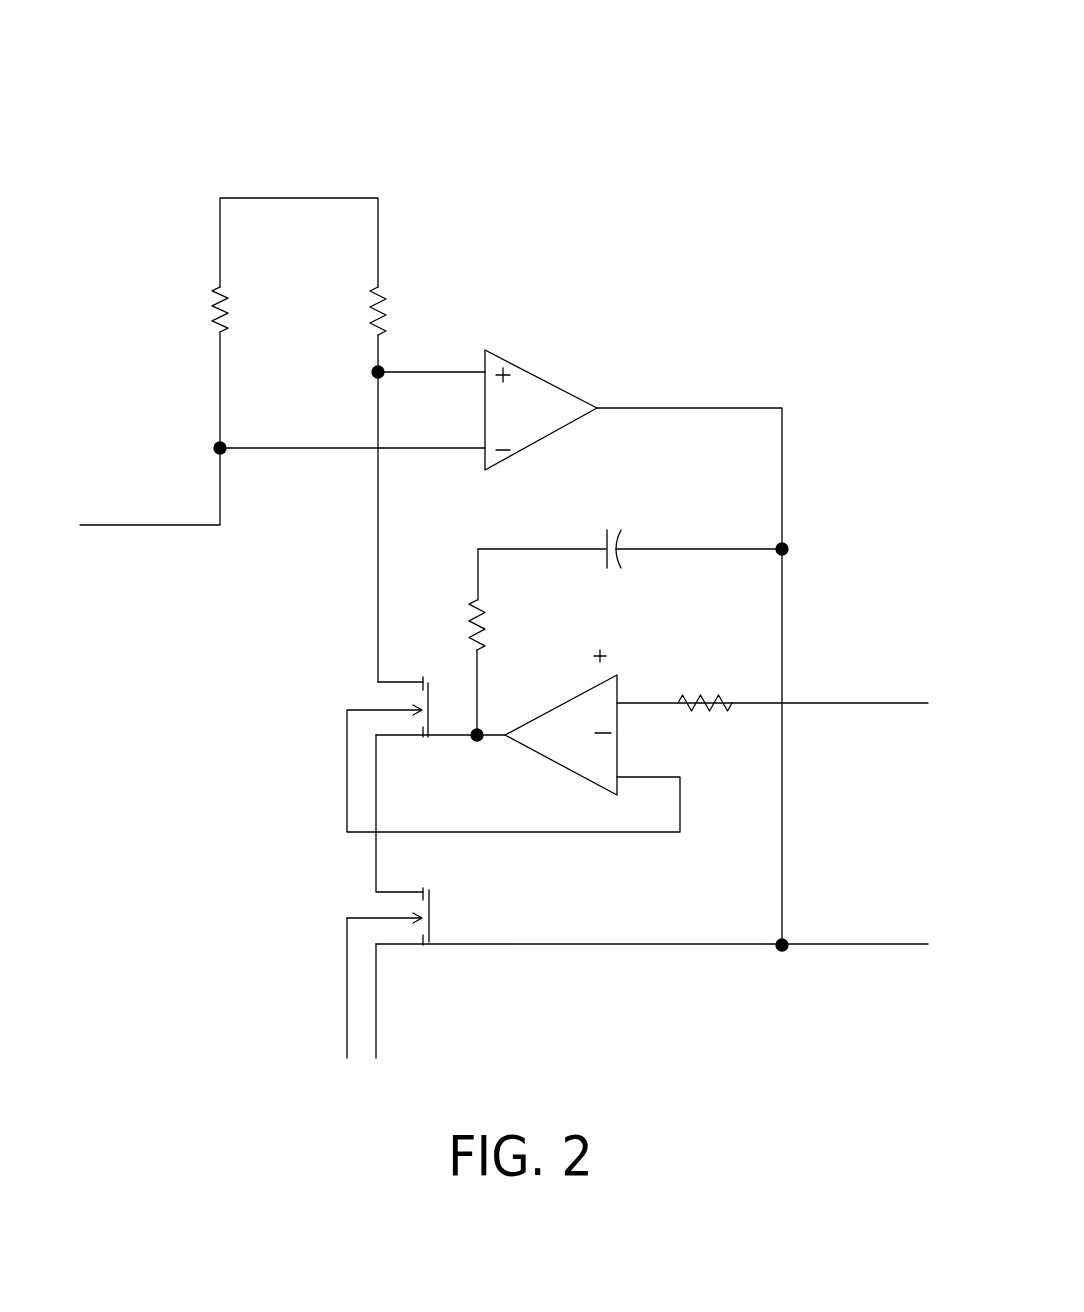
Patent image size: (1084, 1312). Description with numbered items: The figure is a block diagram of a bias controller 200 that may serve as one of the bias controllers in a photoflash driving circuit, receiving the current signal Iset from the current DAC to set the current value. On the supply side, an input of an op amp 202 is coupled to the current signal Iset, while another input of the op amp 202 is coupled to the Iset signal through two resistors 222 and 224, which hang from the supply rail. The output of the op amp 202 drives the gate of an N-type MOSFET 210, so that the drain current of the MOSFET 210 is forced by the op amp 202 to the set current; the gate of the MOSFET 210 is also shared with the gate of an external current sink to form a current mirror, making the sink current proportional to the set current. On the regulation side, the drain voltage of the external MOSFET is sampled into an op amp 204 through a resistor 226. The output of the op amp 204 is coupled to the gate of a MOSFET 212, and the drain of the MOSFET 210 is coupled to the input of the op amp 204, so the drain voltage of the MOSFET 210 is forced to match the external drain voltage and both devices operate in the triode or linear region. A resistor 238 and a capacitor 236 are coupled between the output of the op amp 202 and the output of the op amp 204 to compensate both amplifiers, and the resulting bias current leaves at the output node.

The bias controller 200 is at (505, 538).
The op amp 202 is at (565, 427).
The op amp 204 is at (610, 674).
The MOSFET 210 is at (433, 910).
The MOSFET 212 is at (423, 738).
The resistor 222 is at (383, 303).
The resistor 224 is at (218, 292).
The resistor 226 is at (693, 713).
The capacitor 236 is at (625, 560).
The resistor 238 is at (483, 640).